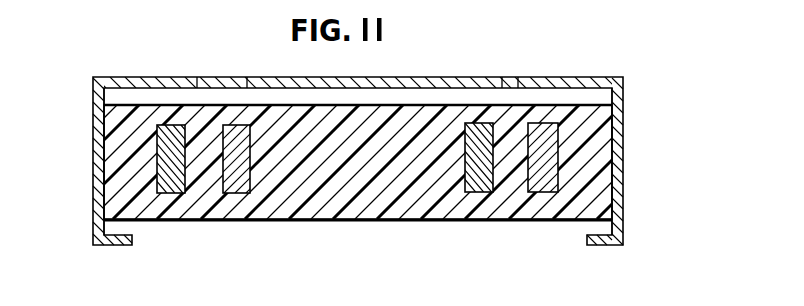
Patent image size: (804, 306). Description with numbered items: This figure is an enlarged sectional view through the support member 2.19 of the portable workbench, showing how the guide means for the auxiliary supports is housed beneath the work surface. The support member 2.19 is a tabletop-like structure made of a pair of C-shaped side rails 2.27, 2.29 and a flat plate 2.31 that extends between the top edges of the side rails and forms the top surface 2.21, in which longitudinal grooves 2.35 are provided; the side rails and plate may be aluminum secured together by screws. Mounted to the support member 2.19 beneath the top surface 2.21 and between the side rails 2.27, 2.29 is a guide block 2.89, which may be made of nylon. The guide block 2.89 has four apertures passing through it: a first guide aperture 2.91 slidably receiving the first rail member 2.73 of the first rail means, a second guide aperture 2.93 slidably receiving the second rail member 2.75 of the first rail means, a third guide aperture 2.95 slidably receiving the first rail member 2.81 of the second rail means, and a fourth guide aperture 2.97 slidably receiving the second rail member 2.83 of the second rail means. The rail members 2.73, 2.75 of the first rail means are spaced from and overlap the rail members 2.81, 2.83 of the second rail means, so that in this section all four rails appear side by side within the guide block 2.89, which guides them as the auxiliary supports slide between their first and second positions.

The top surface 2.21 is at (358, 132).
The support member 2.19 is at (612, 146).
The side rail 2.27 is at (620, 185).
The side rail 2.29 is at (94, 164).
The flat plate 2.31 is at (358, 134).
The longitudinal grooves 2.35 is at (210, 77).
The second rail member 2.75 is at (233, 127).
The first rail member 2.73 is at (545, 190).
The first rail member 2.81 is at (487, 188).
The second rail member 2.83 is at (172, 190).
The guide block 2.89 is at (333, 206).
The first guide aperture 2.91 is at (556, 142).
The second guide aperture 2.93 is at (252, 181).
The third guide aperture 2.95 is at (477, 160).
The fourth guide aperture 2.97 is at (172, 157).